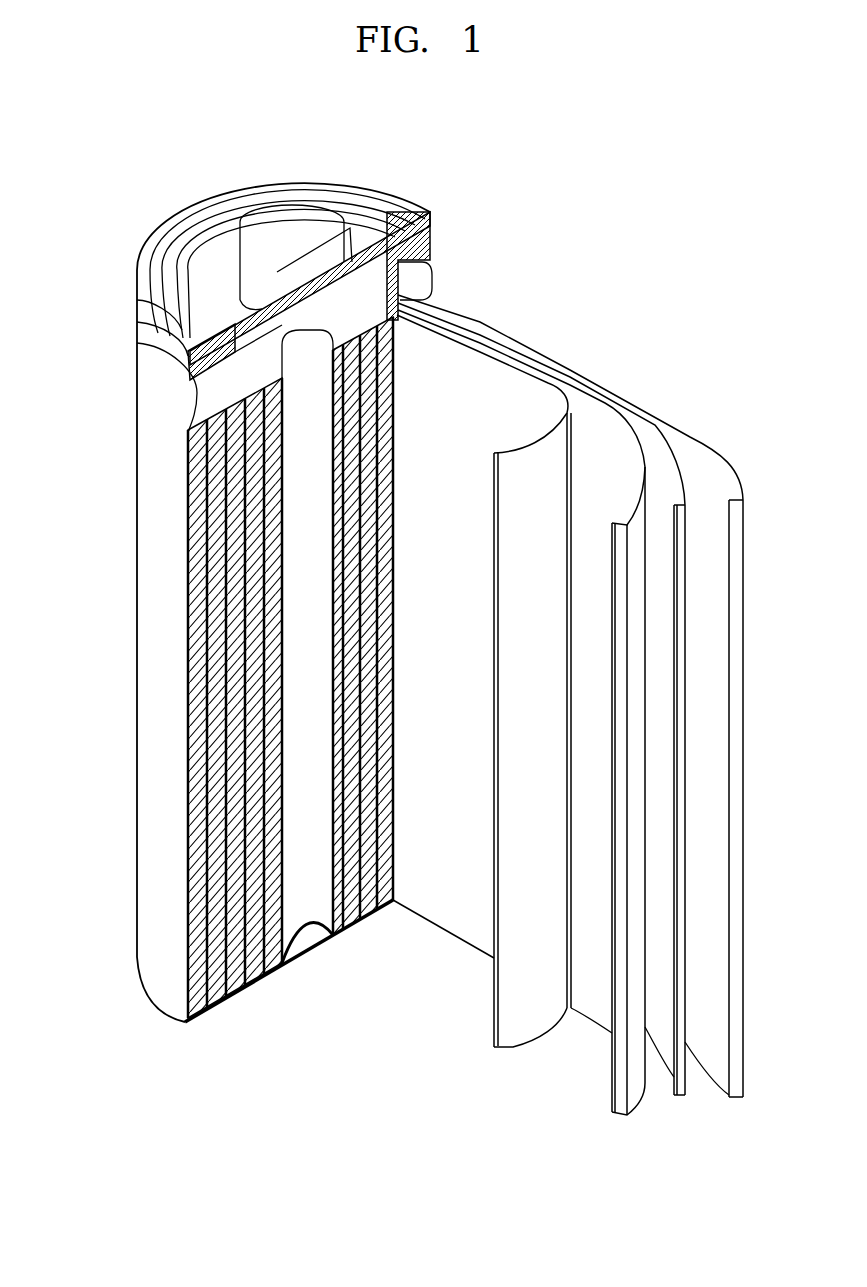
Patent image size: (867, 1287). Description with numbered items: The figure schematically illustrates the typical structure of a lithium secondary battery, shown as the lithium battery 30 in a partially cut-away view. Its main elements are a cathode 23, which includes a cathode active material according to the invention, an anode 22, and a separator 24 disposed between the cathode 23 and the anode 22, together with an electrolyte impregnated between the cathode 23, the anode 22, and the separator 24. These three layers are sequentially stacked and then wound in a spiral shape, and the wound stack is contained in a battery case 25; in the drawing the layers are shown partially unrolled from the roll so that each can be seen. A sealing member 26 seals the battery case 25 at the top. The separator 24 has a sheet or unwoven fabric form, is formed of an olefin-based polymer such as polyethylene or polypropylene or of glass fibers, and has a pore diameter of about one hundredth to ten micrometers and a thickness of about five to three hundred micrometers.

The lithium battery 30 is at (410, 605).
The sealing member 26 is at (277, 233).
The battery case 25 is at (145, 656).
The separator 24 is at (537, 462).
The cathode 23 is at (630, 465).
The anode 22 is at (715, 470).